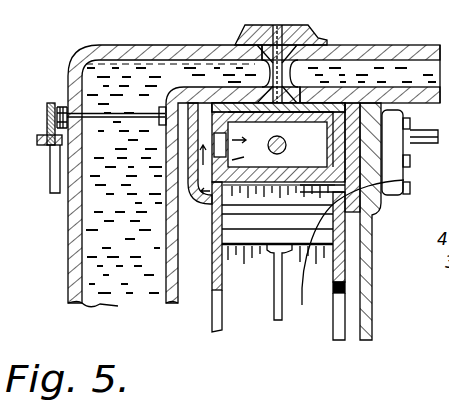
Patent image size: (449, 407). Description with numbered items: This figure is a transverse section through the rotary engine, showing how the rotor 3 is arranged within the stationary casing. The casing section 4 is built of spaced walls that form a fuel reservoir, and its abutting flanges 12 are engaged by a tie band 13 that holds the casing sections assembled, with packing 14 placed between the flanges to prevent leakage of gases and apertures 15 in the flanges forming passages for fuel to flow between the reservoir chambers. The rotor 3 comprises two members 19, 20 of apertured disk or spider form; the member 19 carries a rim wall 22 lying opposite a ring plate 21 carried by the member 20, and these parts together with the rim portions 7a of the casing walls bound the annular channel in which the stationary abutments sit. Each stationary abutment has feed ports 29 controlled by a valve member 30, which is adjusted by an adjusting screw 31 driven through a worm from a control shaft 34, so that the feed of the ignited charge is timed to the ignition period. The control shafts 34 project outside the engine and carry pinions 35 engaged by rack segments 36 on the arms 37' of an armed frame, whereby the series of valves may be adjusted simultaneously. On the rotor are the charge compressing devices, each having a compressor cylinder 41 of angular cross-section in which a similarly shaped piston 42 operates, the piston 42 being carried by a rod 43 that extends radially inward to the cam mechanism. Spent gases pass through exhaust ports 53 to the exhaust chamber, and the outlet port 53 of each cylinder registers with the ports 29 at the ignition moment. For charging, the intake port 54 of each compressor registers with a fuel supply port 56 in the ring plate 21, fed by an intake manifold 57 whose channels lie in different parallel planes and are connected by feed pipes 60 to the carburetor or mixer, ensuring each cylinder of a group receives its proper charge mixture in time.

The rim portions of the walls 7a is at (185, 97).
The tie band 13 is at (242, 34).
The valve member 30 is at (250, 121).
The abutting flanges 12 is at (270, 27).
The packing 14 is at (318, 44).
The apertures 15 is at (342, 45).
The control shaft 34 is at (114, 115).
The pinions 35 is at (47, 115).
The rack segments 36 is at (46, 144).
The arms 37' is at (32, 172).
The casing section 4 is at (68, 215).
The exhaust ports 53 is at (190, 185).
The rim wall 22 is at (208, 214).
The feed ports 29 is at (233, 145).
The adjusting screw 31 is at (287, 146).
The feed pipes 60 is at (424, 144).
The fuel supply port 56 is at (404, 180).
The intake manifold 57 is at (397, 185).
The ring plate 21 is at (376, 251).
The piston 42 is at (258, 235).
The compressor cylinder 41 is at (211, 278).
The rotor member 19 is at (217, 328).
The piston rods 43 is at (271, 314).
The rotor 3 is at (347, 287).
The intake port 54 is at (302, 306).
The rotor member 20 is at (338, 323).